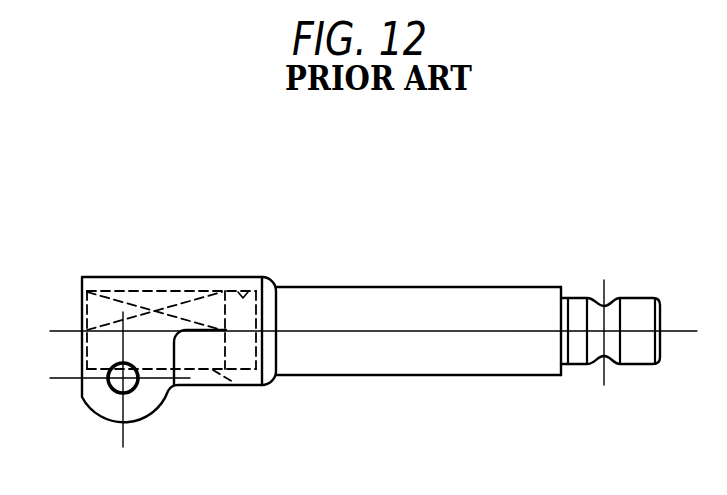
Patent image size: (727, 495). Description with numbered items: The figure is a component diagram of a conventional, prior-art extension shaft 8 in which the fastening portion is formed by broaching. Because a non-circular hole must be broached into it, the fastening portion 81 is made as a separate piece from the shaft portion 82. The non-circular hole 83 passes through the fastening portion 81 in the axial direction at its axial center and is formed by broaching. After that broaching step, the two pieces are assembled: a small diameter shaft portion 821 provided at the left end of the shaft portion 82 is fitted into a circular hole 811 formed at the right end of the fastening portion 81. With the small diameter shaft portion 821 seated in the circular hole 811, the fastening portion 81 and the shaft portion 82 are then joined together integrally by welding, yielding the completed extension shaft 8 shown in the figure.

The extension shaft 8 is at (373, 308).
The fastening portion 81 is at (163, 329).
The circular hole 811 is at (252, 289).
The shaft portion 82 is at (434, 271).
The small diameter shaft portion 821 is at (243, 373).
The non-circular hole 83 is at (129, 291).